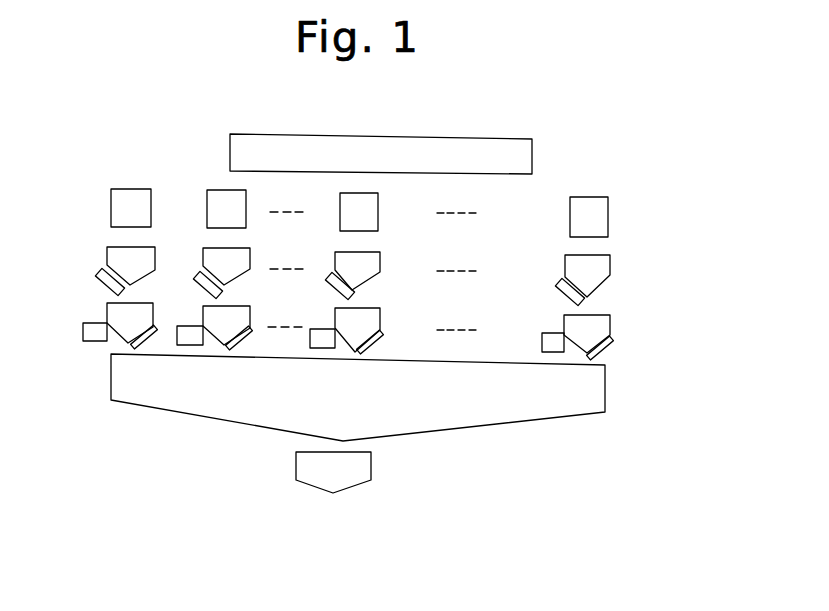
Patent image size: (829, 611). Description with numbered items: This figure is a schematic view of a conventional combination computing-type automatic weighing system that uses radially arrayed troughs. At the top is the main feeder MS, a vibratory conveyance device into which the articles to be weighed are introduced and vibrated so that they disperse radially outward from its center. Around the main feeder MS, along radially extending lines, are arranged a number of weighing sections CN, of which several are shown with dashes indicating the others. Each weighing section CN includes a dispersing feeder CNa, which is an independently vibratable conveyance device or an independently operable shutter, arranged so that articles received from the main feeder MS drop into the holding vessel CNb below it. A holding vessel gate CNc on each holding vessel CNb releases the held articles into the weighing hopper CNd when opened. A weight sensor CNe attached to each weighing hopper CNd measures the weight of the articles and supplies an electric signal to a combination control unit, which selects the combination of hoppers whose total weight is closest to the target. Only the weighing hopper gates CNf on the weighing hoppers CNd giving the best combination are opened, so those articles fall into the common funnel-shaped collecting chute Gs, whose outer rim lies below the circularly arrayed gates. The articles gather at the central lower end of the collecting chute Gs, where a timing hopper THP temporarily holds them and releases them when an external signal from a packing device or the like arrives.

The main feeder MS is at (413, 135).
The weighing section CN is at (106, 147).
The dispersing feeder CNa is at (129, 196).
The holding vessel CNb is at (112, 250).
The holding vessel gate CNc is at (100, 277).
The weighing hopper CNd is at (107, 309).
The weight sensor CNe is at (83, 332).
The weighing hopper gate CNf is at (145, 348).
The collecting chute Gs is at (483, 425).
The timing hopper THP is at (371, 465).